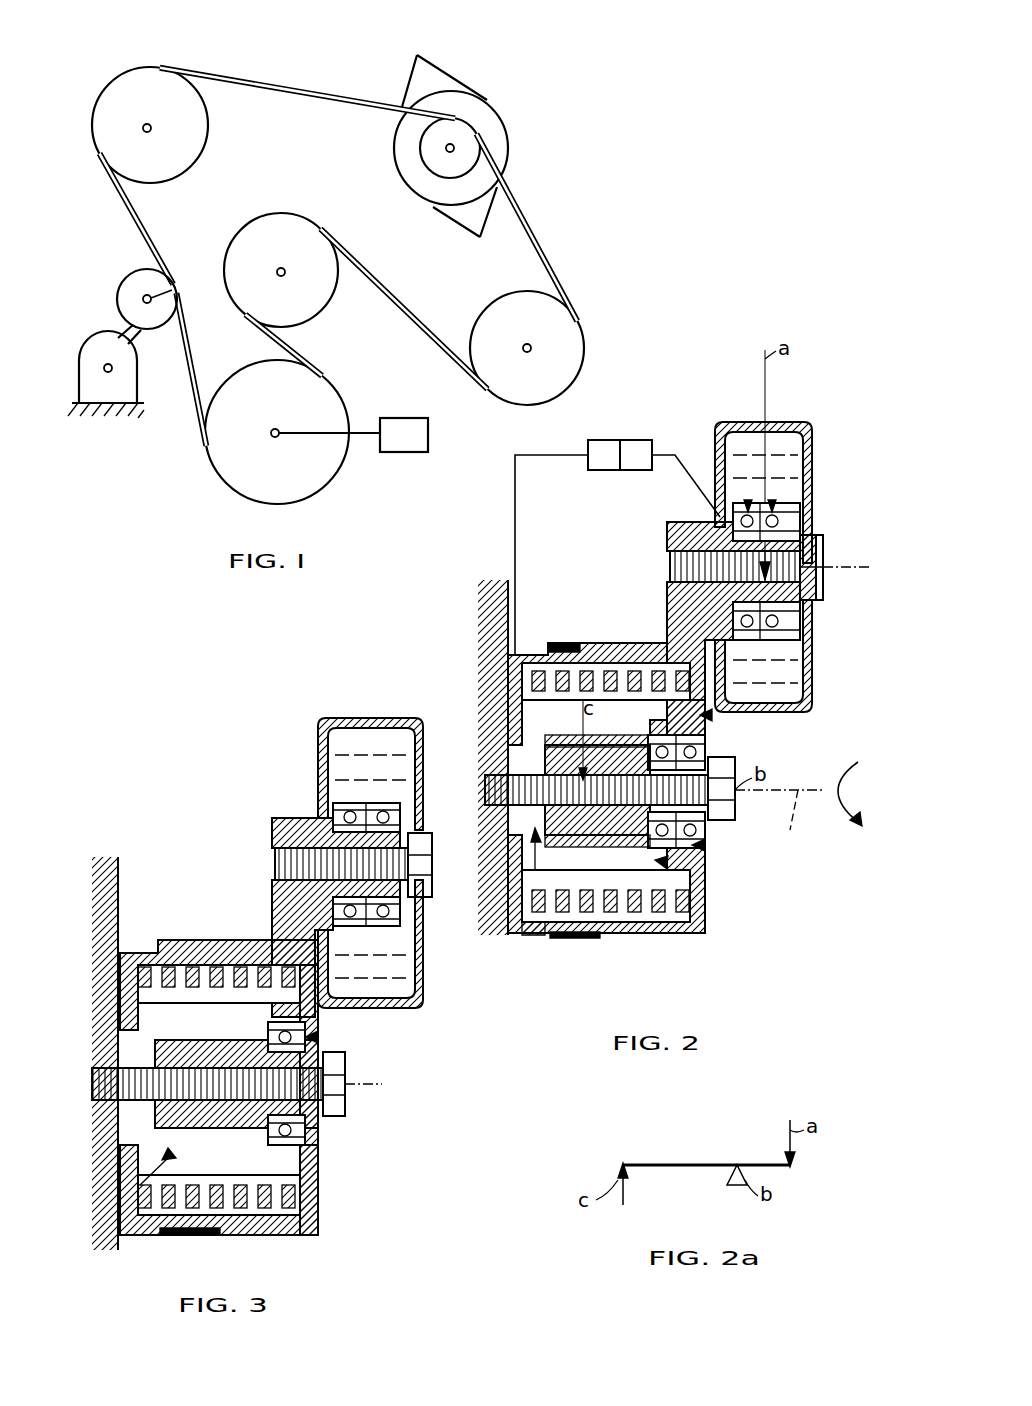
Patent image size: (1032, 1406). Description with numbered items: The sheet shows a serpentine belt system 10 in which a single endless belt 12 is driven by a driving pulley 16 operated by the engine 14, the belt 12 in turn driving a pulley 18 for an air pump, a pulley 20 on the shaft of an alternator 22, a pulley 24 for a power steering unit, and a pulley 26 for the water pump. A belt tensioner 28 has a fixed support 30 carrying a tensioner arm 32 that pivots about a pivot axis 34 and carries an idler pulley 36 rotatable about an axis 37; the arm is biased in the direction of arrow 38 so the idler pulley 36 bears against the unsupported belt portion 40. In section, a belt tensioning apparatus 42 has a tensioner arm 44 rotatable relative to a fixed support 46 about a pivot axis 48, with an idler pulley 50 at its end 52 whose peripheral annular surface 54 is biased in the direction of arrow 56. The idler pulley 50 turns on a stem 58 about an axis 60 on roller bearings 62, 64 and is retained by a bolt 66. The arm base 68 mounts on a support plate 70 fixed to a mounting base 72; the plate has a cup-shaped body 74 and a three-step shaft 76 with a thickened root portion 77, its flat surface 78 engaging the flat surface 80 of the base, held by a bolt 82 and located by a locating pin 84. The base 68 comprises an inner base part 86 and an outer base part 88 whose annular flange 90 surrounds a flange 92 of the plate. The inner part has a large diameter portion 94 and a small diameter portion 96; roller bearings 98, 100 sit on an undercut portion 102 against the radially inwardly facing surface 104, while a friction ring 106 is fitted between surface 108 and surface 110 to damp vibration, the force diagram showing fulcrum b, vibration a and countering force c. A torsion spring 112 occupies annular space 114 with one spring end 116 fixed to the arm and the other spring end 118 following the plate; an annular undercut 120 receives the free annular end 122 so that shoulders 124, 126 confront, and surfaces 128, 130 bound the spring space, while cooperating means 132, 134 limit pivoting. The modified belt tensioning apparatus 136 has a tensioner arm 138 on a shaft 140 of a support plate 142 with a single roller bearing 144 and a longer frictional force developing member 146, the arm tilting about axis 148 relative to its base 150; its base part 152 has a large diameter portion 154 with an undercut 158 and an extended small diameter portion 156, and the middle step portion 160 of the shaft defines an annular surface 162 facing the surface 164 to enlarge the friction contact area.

In FIG. 1, the serpentine belt system 10 is at (448, 52).
In FIG. 1, the belt 12 is at (300, 96).
In FIG. 1, the engine 14 is at (418, 443).
In FIG. 1, the driving pulley 16 is at (286, 408).
In FIG. 1, the pulley 18 is at (160, 109).
In FIG. 1, the pulley 20 is at (463, 141).
In FIG. 1, the alternator 22 is at (490, 118).
In FIG. 1, the pulley 24 is at (534, 333).
In FIG. 1, the pulley 26 is at (294, 255).
In FIG. 1, the belt tensioner 28 is at (80, 334).
In FIG. 1, the fixed support 30 is at (80, 388).
In FIG. 1, the tensioner arm 32 is at (120, 330).
In FIG. 1, the pivot axis 34 is at (112, 370).
In FIG. 1, the idler pulley 36 is at (144, 280).
In FIG. 1, the axis 37 is at (172, 290).
In FIG. 1, the arrow 38 is at (148, 372).
In FIG. 1, the unsupported belt portion 40 is at (156, 236).
In FIG. 2, the belt tensioning apparatus 42 is at (832, 400).
In FIG. 2, the tensioner arm 44 is at (670, 567).
In FIG. 2, the fixed support 46 is at (530, 900).
In FIG. 2, the pivot axis 48 is at (798, 790).
In FIG. 2, the idler pulley 50 is at (746, 420).
In FIG. 2, the end 52 is at (685, 522).
In FIG. 2, the peripheral annular surface 54 is at (782, 422).
In FIG. 2, the arrow 56 is at (848, 762).
In FIG. 2, the stem 58 is at (730, 512).
In FIG. 2, the axis 60 is at (823, 567).
In FIG. 2, the roller bearing 62 is at (748, 500).
In FIG. 2, the roller bearing 64 is at (772, 500).
In FIG. 2, the bolt 66 is at (815, 548).
In FIG. 2, the base 68 is at (712, 715).
In FIG. 2, the support plate 70 is at (515, 690).
In FIG. 2, the mounting base 72 is at (504, 637).
In FIG. 2, the cup-shaped body 74 is at (512, 725).
In FIG. 2, the three-step shaft 76 is at (535, 765).
In FIG. 2, the thickened root portion 77 is at (530, 745).
In FIG. 2, the flat surface 78 is at (535, 845).
In FIG. 2, the flat surface 80 is at (525, 945).
In FIG. 2, the bolt 82 is at (735, 810).
In FIG. 2, the locating pin 84 is at (505, 880).
In FIG. 2, the first inner base part 86 is at (590, 848).
In FIG. 2, the second outer base part 88 is at (555, 938).
In FIG. 2, the annular flange 90 is at (552, 647).
In FIG. 2, the flange 92 is at (533, 935).
In FIG. 2, the large diameter portion 94 is at (690, 862).
In FIG. 2, the small diameter portion 96 is at (568, 745).
In FIG. 2, the roller bearing 98 is at (712, 845).
In FIG. 2, the roller bearing 100 is at (700, 882).
In FIG. 2, the undercut portion 102 is at (705, 745).
In FIG. 2, the radially inwardly facing surface 104 is at (660, 735).
In FIG. 2, the friction ring/sleeve 106 is at (545, 820).
In FIG. 2, the radially inwardly facing surface 108 is at (488, 778).
In FIG. 2, the radially outwardly facing surface 110 is at (578, 930).
In FIG. 2, the torsion spring 112 is at (640, 922).
In FIG. 2, the annular space 114 is at (576, 720).
In FIG. 2, the spring end 116 is at (690, 680).
In FIG. 2, the spring end 118 is at (515, 925).
In FIG. 2, the annular undercut 120 is at (570, 645).
In FIG. 2, the free annular end 122 is at (565, 938).
In FIG. 2, the axially facing shoulder 124 is at (598, 932).
In FIG. 2, the axially facing shoulder 126 is at (600, 645).
In FIG. 2, the radially inwardly facing surface 128 is at (605, 930).
In FIG. 2, the radially inwardly facing surface 130 is at (588, 648).
In FIG. 2, the cooperating means 132 is at (571, 547).
In FIG. 2, the cooperating means 134 is at (670, 478).
In FIG. 3, the belt tensioning apparatus 136 is at (432, 715).
In FIG. 3, the tensioner arm 138 is at (275, 885).
In FIG. 3, the shaft 140 is at (160, 1125).
In FIG. 3, the support plate 142 is at (130, 938).
In FIG. 3, the roller bearing 144 is at (318, 1032).
In FIG. 3, the frictional force developing member 146 is at (160, 1025).
In FIG. 3, the axis 148 is at (360, 1084).
In FIG. 3, the base 150 is at (130, 1185).
In FIG. 3, the tensioner arm base part 152 is at (230, 940).
In FIG. 3, the large diameter portion 154 is at (300, 1160).
In FIG. 3, the small diameter portion 156 is at (212, 1205).
In FIG. 3, the undercut 158 is at (318, 1135).
In FIG. 3, the middle step portion 160 is at (170, 1055).
In FIG. 3, the annular surface 162 is at (140, 1185).
In FIG. 3, the facing surface 164 is at (170, 1108).